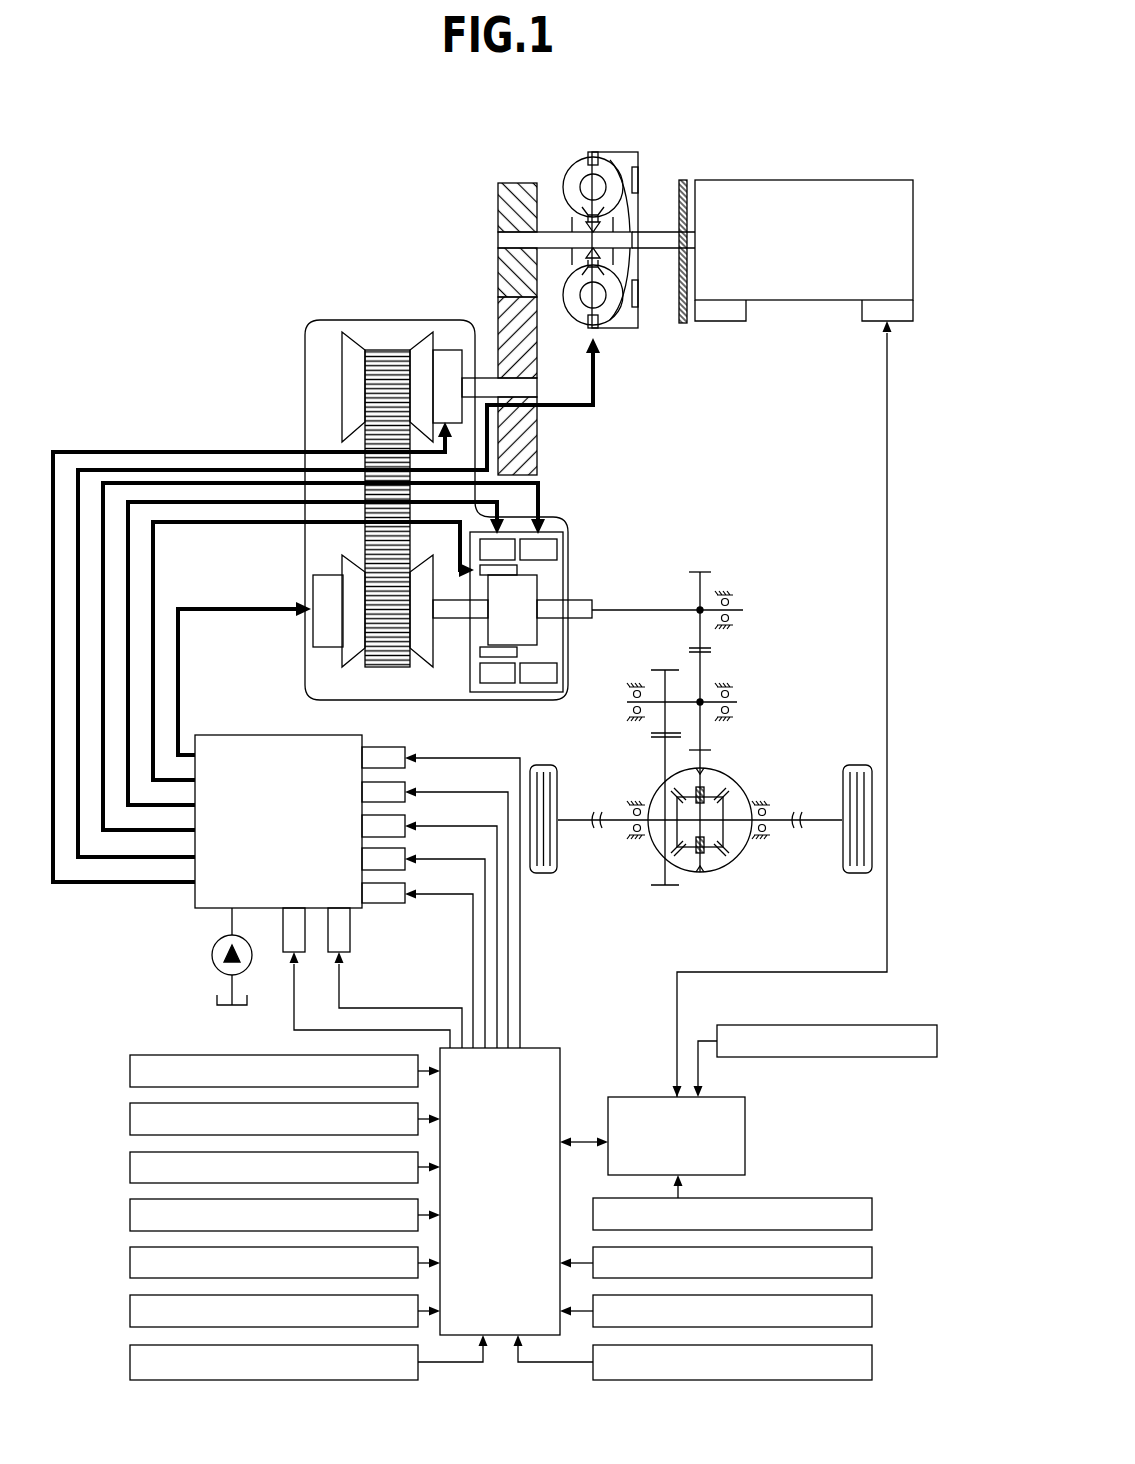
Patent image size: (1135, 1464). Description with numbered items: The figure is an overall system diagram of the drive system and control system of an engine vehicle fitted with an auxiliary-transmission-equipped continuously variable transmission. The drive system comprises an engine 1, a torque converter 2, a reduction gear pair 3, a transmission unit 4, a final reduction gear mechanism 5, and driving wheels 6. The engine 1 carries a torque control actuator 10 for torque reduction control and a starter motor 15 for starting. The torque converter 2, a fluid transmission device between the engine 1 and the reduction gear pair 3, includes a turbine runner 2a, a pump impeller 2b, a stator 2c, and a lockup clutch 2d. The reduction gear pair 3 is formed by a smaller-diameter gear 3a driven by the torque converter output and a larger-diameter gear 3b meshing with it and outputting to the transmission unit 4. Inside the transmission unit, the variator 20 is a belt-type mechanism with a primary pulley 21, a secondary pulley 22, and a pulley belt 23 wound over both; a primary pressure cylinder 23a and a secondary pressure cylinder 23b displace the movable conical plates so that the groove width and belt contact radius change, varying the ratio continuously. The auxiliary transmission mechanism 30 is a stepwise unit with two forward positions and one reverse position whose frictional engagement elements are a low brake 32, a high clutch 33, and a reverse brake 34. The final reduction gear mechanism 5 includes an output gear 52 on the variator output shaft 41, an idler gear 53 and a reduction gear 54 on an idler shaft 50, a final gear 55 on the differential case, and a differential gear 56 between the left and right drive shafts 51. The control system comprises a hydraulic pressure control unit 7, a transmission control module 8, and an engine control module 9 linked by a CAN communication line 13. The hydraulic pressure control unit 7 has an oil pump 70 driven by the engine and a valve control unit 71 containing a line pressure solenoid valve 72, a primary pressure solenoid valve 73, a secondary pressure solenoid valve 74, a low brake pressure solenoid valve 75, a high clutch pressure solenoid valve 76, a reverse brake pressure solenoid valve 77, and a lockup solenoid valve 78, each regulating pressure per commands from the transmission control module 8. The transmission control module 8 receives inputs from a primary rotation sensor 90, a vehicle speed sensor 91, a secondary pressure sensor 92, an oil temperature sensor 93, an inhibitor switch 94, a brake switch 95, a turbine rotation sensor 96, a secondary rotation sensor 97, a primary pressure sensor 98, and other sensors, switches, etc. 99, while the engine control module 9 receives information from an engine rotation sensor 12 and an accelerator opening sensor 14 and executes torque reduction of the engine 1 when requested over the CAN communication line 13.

The engine 1 is at (890, 195).
The torque converter 2 is at (592, 150).
The turbine runner 2a is at (580, 166).
The pump impeller 2b is at (614, 168).
The stator 2c is at (586, 202).
The lockup clutch 2d is at (642, 292).
The reduction gear pair 3 is at (509, 172).
The smaller-diameter gear 3a is at (498, 215).
The larger-diameter gear 3b is at (498, 330).
The transmission unit 4 is at (340, 318).
The final reduction gear mechanism 5 is at (748, 676).
The driving wheels 6 is at (560, 884).
The hydraulic pressure control unit 7 is at (326, 655).
The transmission control module 8 is at (550, 1038).
The engine control module 9 is at (752, 1138).
The torque control actuator 10 is at (866, 321).
The engine rotation sensor 12 is at (888, 1057).
The CAN communication line 13 is at (572, 1136).
The accelerator opening sensor 14 is at (872, 1216).
The starter motor 15 is at (720, 321).
The variator 20 is at (325, 350).
The primary pulley 21 is at (358, 388).
The secondary pulley 22 is at (355, 662).
The pulley belt 23 is at (385, 358).
The primary pressure cylinder 23a is at (447, 358).
The secondary pressure cylinder 23b is at (325, 627).
The auxiliary transmission mechanism 30 is at (566, 552).
The low brake 32 is at (508, 545).
The high clutch 33 is at (480, 668).
The reverse brake 34 is at (545, 548).
The variator output shaft 41 is at (680, 608).
The idler shaft 50 is at (710, 705).
The drive shafts 51 is at (588, 817).
The output gear 52 is at (705, 580).
The idler gear 53 is at (702, 670).
The reduction gear 54 is at (665, 680).
The final gear 55 is at (665, 755).
The differential gear 56 is at (746, 776).
The oil pump 70 is at (216, 966).
The valve control unit 71 is at (195, 895).
The line pressure solenoid valve 72 is at (283, 950).
The primary pressure solenoid valve 73 is at (352, 945).
The secondary pressure solenoid valve 74 is at (412, 906).
The low brake pressure solenoid valve 75 is at (412, 873).
The high clutch pressure solenoid valve 76 is at (412, 839).
The reverse brake pressure solenoid valve 77 is at (412, 805).
The lockup solenoid valve 78 is at (412, 772).
The primary rotation sensor 90 is at (130, 1072).
The vehicle speed sensor 91 is at (130, 1120).
The secondary pressure sensor 92 is at (130, 1168).
The oil temperature sensor 93 is at (130, 1216).
The inhibitor switch 94 is at (130, 1264).
The brake switch 95 is at (130, 1312).
The turbine rotation sensor 96 is at (130, 1363).
The secondary rotation sensor 97 is at (872, 1264).
The primary pressure sensor 98 is at (872, 1312).
The sensors, switches, etc. 99 is at (872, 1364).